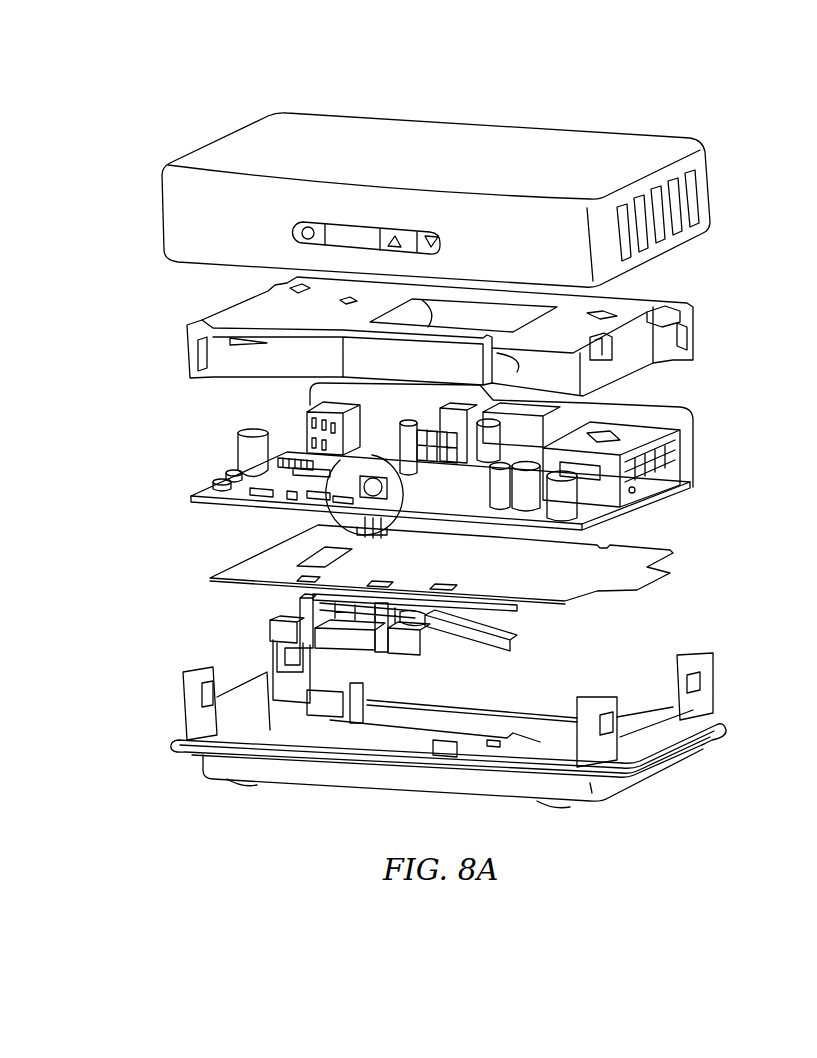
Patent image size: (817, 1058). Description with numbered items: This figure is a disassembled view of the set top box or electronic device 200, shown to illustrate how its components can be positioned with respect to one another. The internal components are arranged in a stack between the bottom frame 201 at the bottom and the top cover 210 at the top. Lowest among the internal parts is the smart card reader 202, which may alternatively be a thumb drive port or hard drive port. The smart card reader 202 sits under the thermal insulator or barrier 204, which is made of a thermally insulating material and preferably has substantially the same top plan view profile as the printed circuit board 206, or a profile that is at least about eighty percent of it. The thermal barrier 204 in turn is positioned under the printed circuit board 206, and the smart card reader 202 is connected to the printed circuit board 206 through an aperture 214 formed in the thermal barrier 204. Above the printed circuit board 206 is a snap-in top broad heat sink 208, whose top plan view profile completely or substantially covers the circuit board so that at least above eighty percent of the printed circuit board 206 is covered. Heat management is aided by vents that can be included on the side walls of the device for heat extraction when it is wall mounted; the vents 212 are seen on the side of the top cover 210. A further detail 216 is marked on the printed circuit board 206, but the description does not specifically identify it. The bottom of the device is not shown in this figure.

The electronic device 200 is at (185, 131).
The bottom frame 201 is at (663, 757).
The smart card reader 202 is at (465, 634).
The thermal barrier 204 is at (673, 553).
The printed circuit board 206 is at (668, 490).
The top heat sink 208 is at (690, 313).
The top cover 210 is at (700, 194).
The vent slots 212 is at (657, 236).
The aperture 214 is at (312, 553).
The sensor component 216 is at (392, 474).